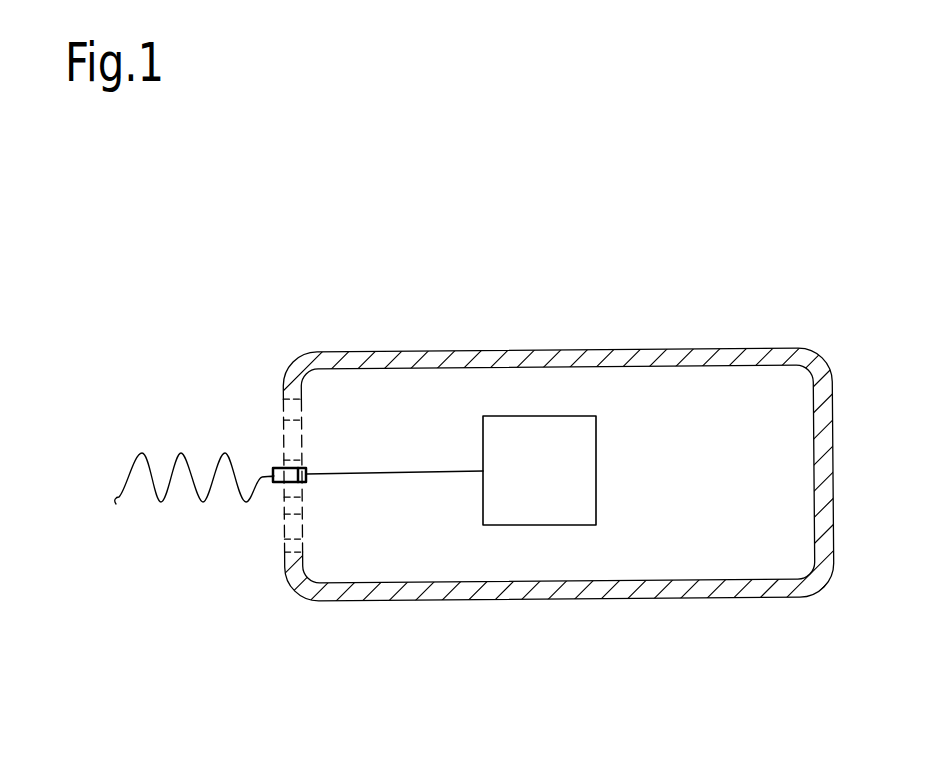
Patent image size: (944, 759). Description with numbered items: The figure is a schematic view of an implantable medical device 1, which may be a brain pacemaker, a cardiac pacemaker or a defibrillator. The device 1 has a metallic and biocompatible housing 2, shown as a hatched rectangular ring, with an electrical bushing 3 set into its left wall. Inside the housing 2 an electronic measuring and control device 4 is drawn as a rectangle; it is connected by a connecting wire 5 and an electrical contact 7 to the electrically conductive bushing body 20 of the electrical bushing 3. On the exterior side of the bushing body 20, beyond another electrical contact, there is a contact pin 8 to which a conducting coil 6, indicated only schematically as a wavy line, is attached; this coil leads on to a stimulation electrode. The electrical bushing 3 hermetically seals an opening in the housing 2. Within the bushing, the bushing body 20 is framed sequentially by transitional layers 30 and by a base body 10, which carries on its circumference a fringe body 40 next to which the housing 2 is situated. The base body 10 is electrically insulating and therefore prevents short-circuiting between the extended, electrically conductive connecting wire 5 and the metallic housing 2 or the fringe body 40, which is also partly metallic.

The implantable medical device 1 is at (693, 226).
The housing 2 is at (612, 347).
The electrical bushing 3 is at (285, 515).
The electronic measuring and control device 4 is at (596, 486).
The connecting wire 5 is at (428, 474).
The conducting coil 6 is at (158, 493).
The electrical contact 7 is at (306, 470).
The contact pin 8 is at (278, 470).
The base body 10 is at (285, 458).
The bushing body 20 is at (288, 467).
The transitional layers 30 is at (283, 437).
The fringe body 40 is at (287, 410).